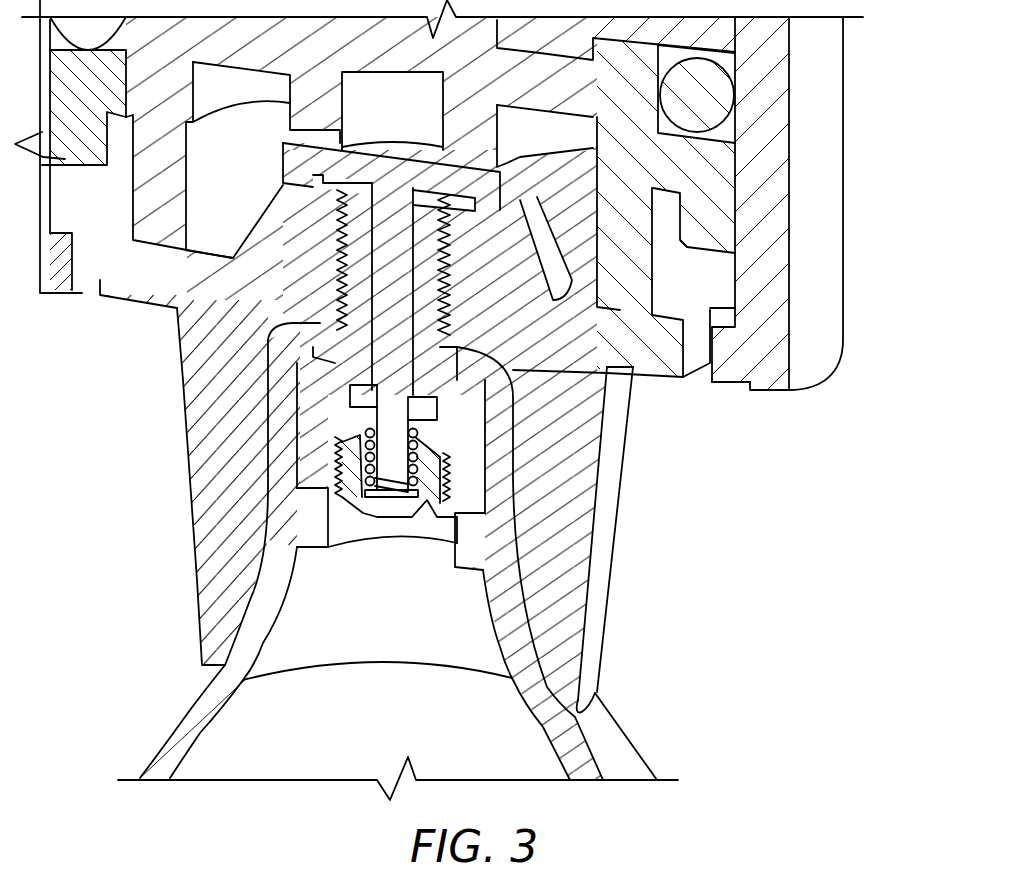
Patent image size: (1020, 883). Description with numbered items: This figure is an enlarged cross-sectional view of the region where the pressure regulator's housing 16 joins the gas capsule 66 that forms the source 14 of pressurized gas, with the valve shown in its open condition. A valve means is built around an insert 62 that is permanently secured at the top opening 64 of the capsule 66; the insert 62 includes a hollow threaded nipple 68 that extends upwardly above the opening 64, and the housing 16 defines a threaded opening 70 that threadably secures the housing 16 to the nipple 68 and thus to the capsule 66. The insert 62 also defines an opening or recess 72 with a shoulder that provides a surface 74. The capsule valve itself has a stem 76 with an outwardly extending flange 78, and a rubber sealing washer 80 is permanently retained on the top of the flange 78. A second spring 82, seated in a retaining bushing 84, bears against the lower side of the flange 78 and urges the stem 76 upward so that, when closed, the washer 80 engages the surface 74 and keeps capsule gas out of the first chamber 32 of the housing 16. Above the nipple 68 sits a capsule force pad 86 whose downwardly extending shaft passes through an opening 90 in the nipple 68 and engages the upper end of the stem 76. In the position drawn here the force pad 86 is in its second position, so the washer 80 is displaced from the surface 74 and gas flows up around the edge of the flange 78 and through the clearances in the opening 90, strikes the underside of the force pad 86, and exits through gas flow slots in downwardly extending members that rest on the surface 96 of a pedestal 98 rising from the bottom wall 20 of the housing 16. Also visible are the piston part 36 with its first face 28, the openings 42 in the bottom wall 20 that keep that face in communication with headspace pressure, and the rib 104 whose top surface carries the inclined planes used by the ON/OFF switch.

The source of pressurized gas 14 is at (587, 743).
The housing 16 is at (823, 208).
The bottom wall 20 is at (750, 390).
The first face 28 is at (240, 72).
The first chamber 32 is at (238, 196).
The piston part 36 is at (710, 207).
The openings 42 is at (82, 293).
The insert 62 is at (307, 457).
The top opening 64 is at (337, 333).
The capsule 66 is at (197, 712).
The hollow threaded nipple 68 is at (353, 275).
The threaded opening 70 is at (440, 230).
The recess 72 is at (313, 455).
The surface 74 is at (357, 430).
The stem 76 is at (393, 370).
The outwardly extending flange 78 is at (415, 427).
The rubber sealing washer 80 is at (427, 413).
The second spring 82 is at (387, 480).
The retaining bushing 84 is at (417, 517).
The capsule force pad 86 is at (302, 163).
The opening 90 is at (350, 305).
The surface 96 is at (333, 185).
The pedestal 98 is at (550, 270).
The rib 104 is at (673, 265).